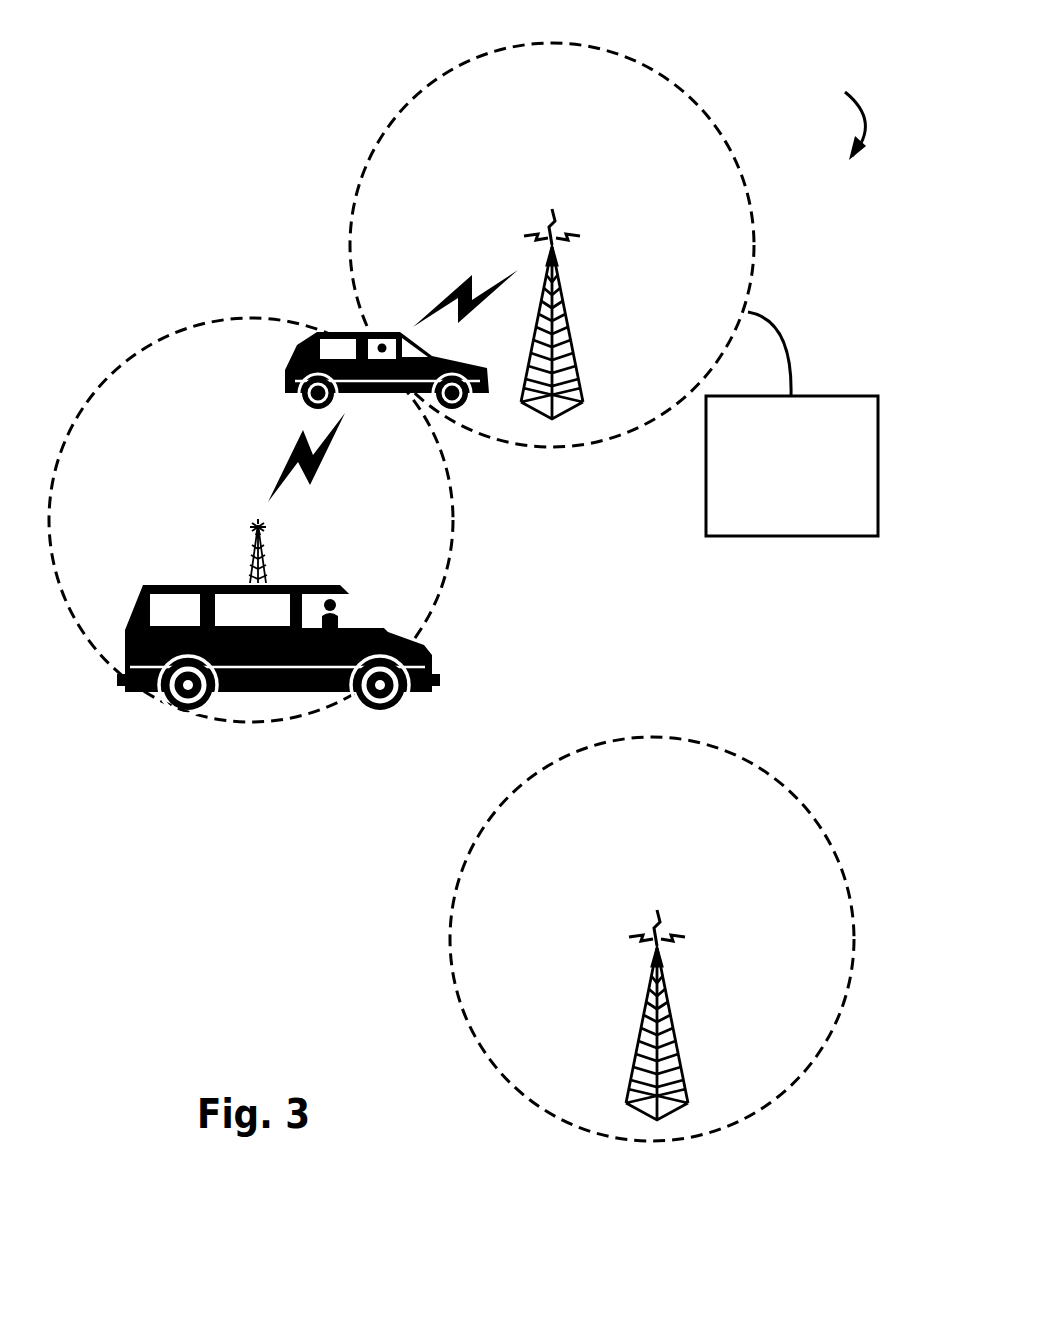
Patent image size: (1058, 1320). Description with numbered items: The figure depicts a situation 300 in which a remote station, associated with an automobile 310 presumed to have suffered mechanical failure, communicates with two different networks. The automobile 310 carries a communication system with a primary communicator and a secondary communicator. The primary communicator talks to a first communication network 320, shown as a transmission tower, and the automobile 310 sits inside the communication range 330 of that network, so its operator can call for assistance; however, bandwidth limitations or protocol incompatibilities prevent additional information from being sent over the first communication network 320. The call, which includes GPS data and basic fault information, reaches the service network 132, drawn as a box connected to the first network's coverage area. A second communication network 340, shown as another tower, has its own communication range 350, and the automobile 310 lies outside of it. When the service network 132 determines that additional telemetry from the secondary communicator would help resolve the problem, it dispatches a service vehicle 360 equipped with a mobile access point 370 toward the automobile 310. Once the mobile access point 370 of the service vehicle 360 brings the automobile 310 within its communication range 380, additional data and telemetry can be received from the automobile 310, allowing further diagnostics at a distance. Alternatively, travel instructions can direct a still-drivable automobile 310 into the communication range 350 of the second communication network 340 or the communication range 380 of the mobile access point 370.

The situation 300 is at (837, 93).
The automobile 310 is at (355, 331).
The first communication network 320 is at (578, 370).
The communication range 330 is at (355, 202).
The second communication network 340 is at (677, 1043).
The communication range 350 is at (447, 918).
The service vehicle 360 is at (430, 670).
The mobile access point 370 is at (277, 578).
The communication range 380 is at (168, 337).
The service network 132 is at (792, 424).